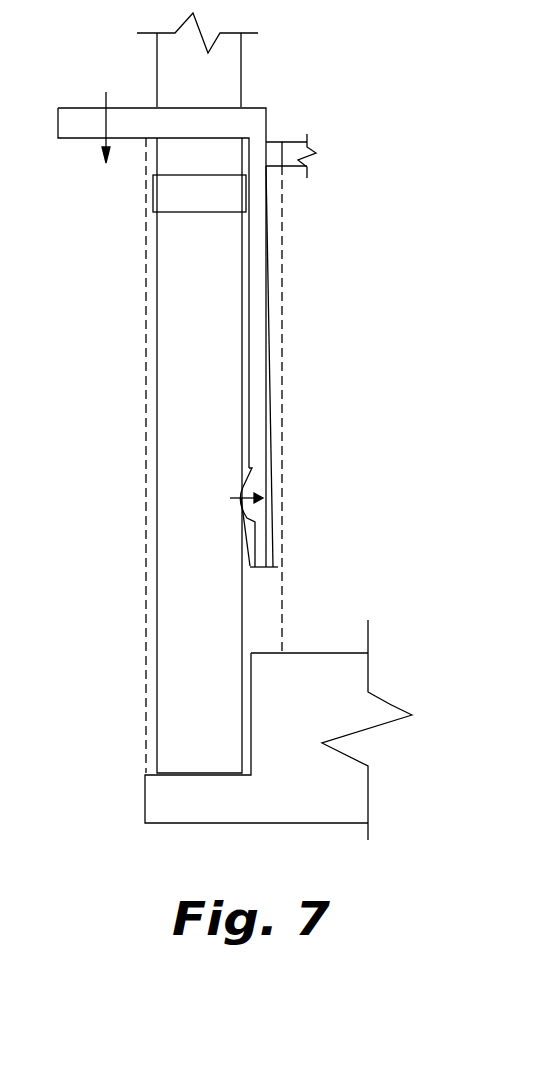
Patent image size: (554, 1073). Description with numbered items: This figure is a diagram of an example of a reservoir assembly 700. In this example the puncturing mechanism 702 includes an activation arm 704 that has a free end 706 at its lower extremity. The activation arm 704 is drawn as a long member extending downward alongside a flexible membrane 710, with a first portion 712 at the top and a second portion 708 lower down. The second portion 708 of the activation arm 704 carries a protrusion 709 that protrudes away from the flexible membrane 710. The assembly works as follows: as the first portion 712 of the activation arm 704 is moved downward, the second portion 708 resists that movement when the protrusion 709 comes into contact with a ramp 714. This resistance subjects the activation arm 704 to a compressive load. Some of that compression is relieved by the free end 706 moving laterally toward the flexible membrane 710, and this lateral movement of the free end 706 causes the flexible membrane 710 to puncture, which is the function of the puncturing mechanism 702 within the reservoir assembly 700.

The reservoir assembly 700 is at (355, 80).
The puncturing mechanism 702 is at (306, 520).
The activation arm 704 is at (271, 348).
The free end 706 is at (266, 562).
The second portion 708 is at (213, 535).
The protrusion 709 is at (246, 484).
The flexible membrane 710 is at (285, 300).
The first portion 712 is at (256, 100).
The ramp 714 is at (249, 552).